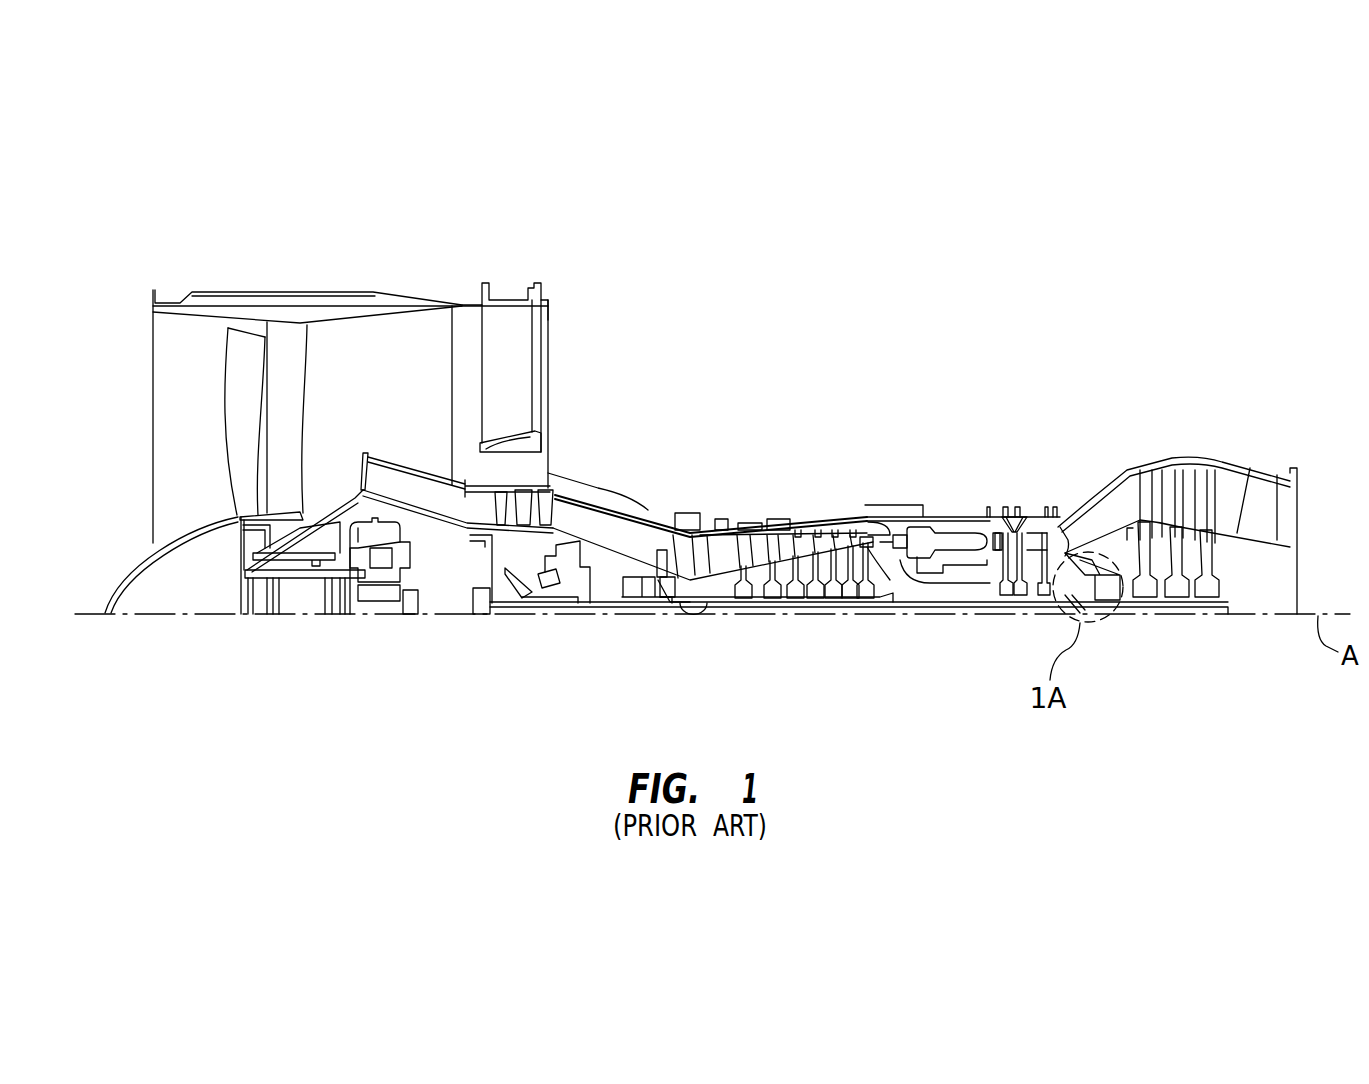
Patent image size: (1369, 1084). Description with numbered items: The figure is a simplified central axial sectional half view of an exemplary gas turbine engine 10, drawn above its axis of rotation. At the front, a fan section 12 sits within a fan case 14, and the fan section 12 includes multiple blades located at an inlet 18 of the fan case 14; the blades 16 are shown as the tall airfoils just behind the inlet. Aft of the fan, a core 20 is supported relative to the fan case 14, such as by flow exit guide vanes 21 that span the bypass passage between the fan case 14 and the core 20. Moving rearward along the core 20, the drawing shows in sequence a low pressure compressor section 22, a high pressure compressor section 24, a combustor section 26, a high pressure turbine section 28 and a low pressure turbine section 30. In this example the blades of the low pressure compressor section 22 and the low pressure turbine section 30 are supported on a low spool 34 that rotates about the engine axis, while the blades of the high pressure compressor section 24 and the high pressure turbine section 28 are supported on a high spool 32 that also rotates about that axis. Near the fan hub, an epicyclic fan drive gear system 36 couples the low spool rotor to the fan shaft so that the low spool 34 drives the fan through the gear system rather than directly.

The gas turbine engine 10 is at (900, 257).
The fan section 12 is at (340, 268).
The fan case 14 is at (355, 300).
The fan blade 16 is at (241, 440).
The inlet 18 is at (138, 467).
The core 20 is at (1222, 468).
The flow exit guide vanes 21 is at (520, 380).
The low pressure compressor section 22 is at (603, 482).
The high pressure compressor section 24 is at (883, 492).
The combustor section 26 is at (986, 492).
The high pressure turbine section 28 is at (1060, 492).
The low pressure turbine section 30 is at (1223, 455).
The high spool 32 is at (907, 594).
The low spool 34 is at (1108, 598).
The epicyclic fan drive gear system 36 is at (378, 625).